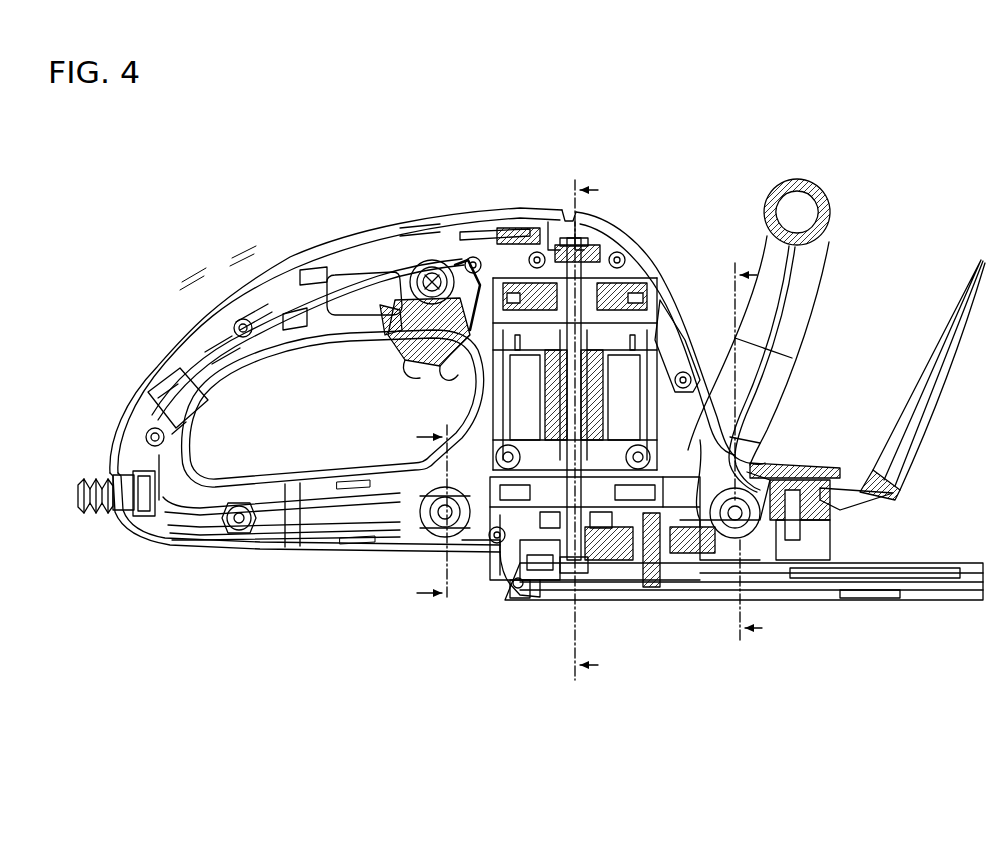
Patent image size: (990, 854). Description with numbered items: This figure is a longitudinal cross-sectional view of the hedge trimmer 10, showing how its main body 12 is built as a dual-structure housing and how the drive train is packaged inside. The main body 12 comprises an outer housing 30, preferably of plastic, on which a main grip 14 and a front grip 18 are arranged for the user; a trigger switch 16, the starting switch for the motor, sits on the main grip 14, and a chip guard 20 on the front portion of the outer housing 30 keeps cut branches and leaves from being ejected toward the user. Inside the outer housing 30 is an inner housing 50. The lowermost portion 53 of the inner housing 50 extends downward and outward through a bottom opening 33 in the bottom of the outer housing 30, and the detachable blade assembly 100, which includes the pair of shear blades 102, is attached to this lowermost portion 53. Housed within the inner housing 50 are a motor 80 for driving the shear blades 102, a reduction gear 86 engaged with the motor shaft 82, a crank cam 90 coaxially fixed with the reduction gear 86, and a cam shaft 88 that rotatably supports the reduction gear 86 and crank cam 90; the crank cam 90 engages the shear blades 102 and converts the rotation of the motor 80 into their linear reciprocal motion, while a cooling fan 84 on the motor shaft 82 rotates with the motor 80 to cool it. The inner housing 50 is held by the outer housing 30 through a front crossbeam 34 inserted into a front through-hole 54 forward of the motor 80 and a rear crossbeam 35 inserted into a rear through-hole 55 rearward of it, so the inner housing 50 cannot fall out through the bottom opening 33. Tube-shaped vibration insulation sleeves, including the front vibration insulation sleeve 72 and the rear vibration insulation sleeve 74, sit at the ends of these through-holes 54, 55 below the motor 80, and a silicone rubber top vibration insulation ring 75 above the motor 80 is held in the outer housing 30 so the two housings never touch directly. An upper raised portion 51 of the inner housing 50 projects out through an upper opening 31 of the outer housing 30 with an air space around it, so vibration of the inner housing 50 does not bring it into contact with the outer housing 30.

The hedge trimmer 10 is at (800, 74).
The main body 12 is at (124, 382).
The main grip 14 is at (217, 347).
The trigger switch 16 is at (388, 308).
The front grip 18 is at (803, 180).
The chip guard 20 is at (980, 260).
The outer housing 30 is at (467, 211).
The upper opening 31 is at (562, 215).
The bottom opening 33 is at (505, 588).
The front crossbeam 34 is at (750, 455).
The rear crossbeam 35 is at (393, 553).
The inner housing 50 is at (443, 240).
The upper raised portion 51 is at (660, 260).
The lowermost portion 53 is at (518, 588).
The front through-hole 54 is at (792, 488).
The rear through-hole 55 is at (430, 522).
The front vibration insulation sleeve 72 is at (765, 465).
The rear vibration insulation sleeve 74 is at (393, 547).
The top vibration insulation ring 75 is at (627, 233).
The motor 80 is at (540, 372).
The motor shaft 82 is at (565, 398).
The cooling fan 84 is at (532, 582).
The reduction gear 86 is at (612, 578).
The cam shaft 88 is at (652, 585).
The crank cam 90 is at (692, 577).
The blade assembly 100 is at (822, 608).
The shear blades 102 is at (957, 594).